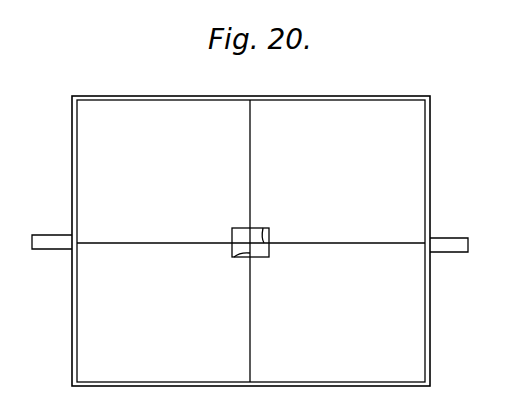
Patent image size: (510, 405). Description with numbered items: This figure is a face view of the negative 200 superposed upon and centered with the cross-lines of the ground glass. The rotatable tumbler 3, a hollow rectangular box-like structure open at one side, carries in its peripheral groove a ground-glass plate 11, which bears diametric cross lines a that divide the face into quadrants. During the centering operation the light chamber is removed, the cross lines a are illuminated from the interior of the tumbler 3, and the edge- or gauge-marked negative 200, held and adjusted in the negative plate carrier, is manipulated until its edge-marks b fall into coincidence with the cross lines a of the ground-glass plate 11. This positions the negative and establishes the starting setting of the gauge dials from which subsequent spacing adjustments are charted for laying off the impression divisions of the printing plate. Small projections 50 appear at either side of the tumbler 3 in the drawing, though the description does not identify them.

The tumbler 3 is at (121, 97).
The ground-glass plate 11 is at (419, 183).
The tabs 50 is at (56, 248).
The negative 200 is at (235, 228).
The cross lines a is at (138, 243).
The edge-marks b is at (264, 228).